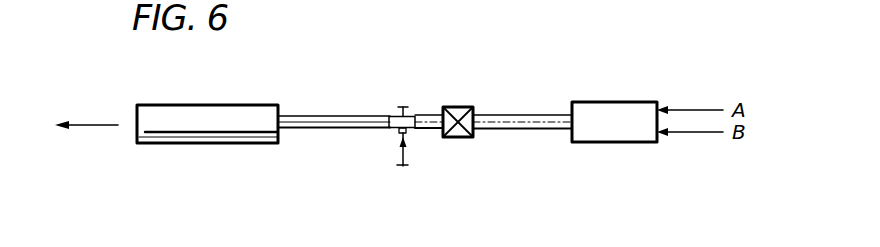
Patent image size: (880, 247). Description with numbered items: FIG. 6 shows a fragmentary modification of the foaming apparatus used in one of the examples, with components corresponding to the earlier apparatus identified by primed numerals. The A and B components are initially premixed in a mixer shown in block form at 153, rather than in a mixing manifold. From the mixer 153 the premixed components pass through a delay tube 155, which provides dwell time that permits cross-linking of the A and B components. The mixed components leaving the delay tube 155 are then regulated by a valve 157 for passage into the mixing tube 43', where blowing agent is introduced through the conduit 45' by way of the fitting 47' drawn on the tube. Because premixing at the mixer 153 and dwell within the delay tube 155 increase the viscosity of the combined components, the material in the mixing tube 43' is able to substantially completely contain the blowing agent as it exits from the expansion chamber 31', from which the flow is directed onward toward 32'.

The expansion chamber 31' is at (207, 108).
The detector (connection to) 32' is at (70, 149).
The mixing chamber 43' is at (334, 104).
The conduit 45' is at (427, 157).
The valve 47' is at (398, 101).
The mixer 153 is at (595, 102).
The delay tube 155 is at (503, 130).
The valve 157 is at (452, 107).